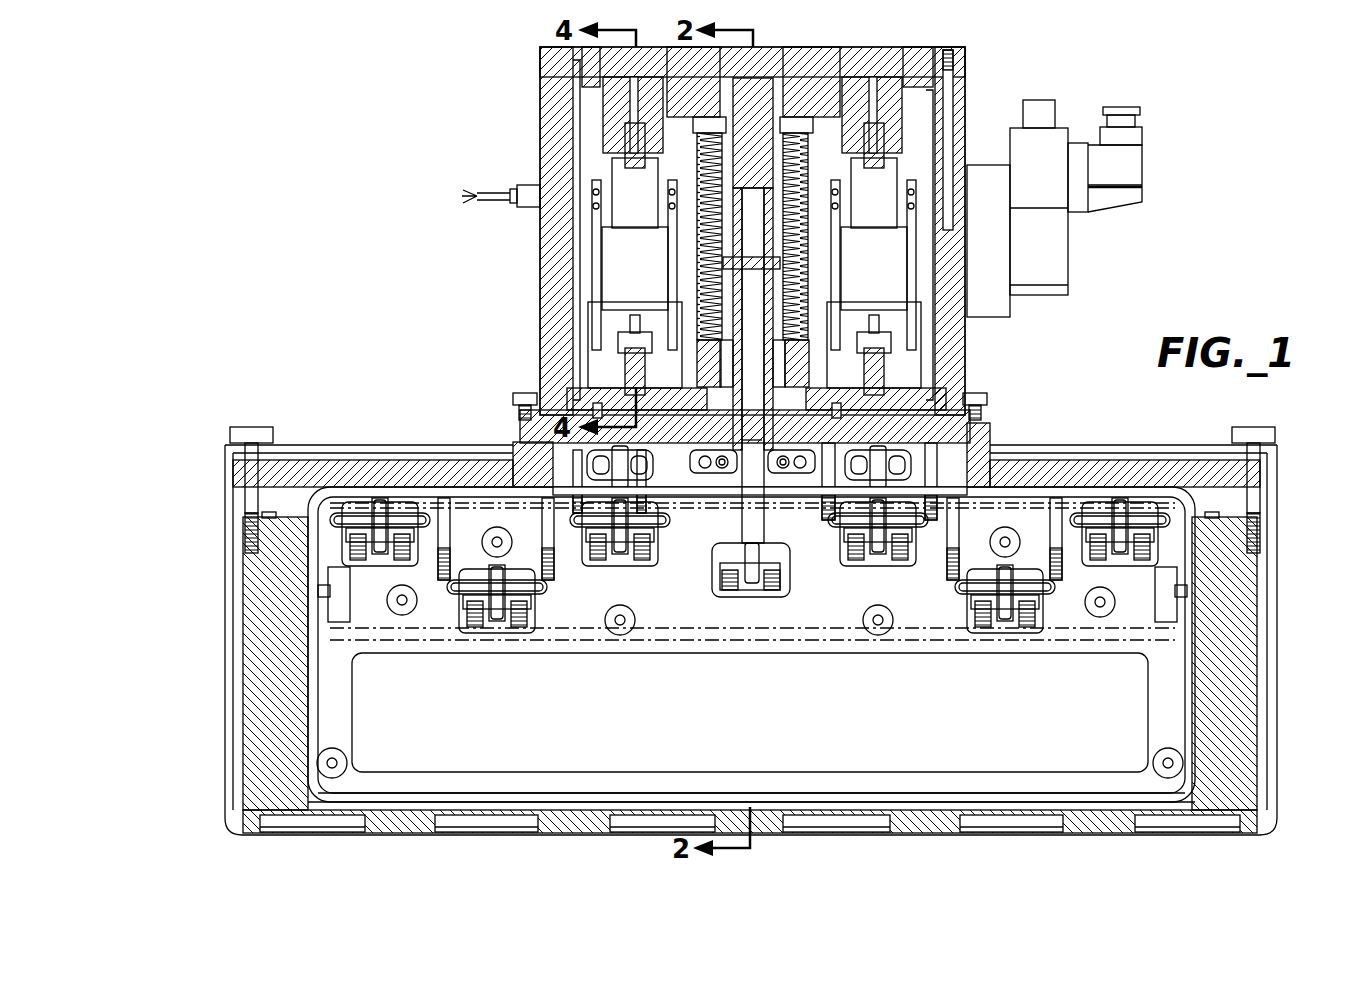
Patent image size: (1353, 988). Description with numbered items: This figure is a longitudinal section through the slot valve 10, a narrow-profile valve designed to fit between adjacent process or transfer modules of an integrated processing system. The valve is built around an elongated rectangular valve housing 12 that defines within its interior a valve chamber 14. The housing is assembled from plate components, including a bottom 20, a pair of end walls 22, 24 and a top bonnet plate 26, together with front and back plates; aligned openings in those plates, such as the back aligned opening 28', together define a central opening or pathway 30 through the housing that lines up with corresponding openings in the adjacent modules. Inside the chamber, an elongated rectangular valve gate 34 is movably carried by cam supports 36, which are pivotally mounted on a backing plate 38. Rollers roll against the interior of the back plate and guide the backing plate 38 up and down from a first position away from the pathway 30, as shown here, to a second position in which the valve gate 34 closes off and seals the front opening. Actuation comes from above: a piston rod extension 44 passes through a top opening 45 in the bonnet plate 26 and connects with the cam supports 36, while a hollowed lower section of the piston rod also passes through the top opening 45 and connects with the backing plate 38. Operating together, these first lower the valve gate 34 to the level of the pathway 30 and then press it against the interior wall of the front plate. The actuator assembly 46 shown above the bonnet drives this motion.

The slot valve 10 is at (418, 328).
The valve housing 12 is at (378, 455).
The valve chamber 14 is at (470, 487).
The bottom 20 is at (826, 836).
The end wall 22 is at (226, 666).
The end wall 24 is at (1278, 666).
The top bonnet plate 26 is at (1133, 455).
The back aligned opening 28' is at (751, 814).
The central opening or pathway 30 is at (686, 757).
The valve gate 34 is at (556, 622).
The cam supports 36 is at (628, 560).
The backing plate 38 is at (1173, 620).
The piston rod extension 44 is at (762, 287).
The top opening 45 is at (748, 400).
The actuator housing 46 is at (476, 138).